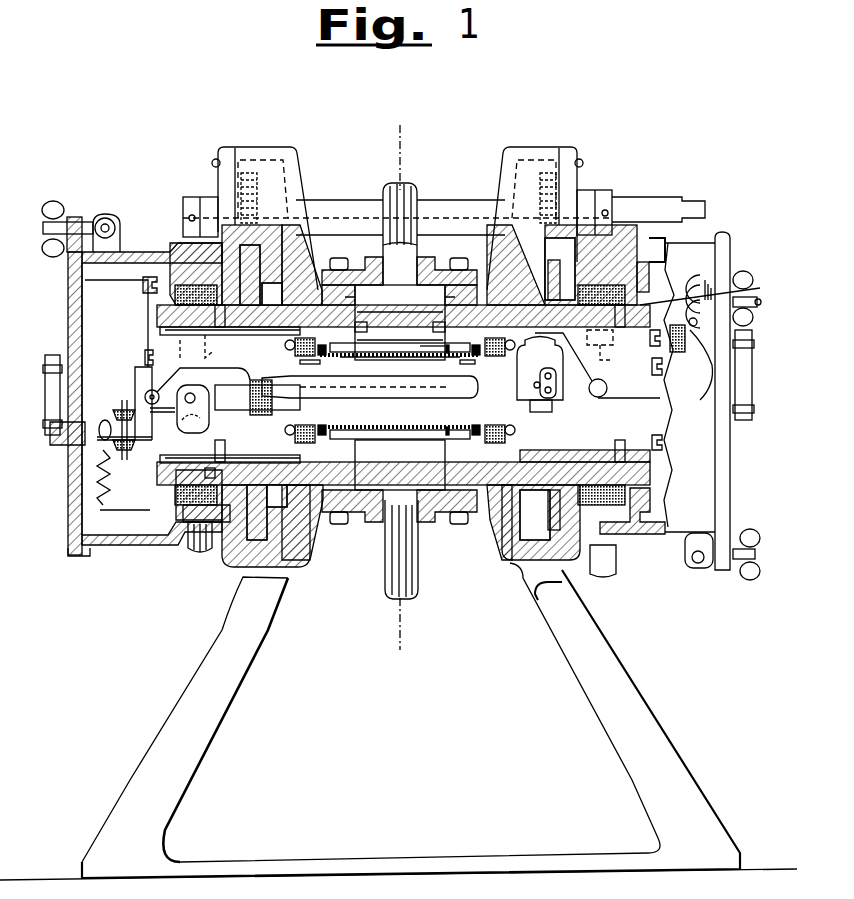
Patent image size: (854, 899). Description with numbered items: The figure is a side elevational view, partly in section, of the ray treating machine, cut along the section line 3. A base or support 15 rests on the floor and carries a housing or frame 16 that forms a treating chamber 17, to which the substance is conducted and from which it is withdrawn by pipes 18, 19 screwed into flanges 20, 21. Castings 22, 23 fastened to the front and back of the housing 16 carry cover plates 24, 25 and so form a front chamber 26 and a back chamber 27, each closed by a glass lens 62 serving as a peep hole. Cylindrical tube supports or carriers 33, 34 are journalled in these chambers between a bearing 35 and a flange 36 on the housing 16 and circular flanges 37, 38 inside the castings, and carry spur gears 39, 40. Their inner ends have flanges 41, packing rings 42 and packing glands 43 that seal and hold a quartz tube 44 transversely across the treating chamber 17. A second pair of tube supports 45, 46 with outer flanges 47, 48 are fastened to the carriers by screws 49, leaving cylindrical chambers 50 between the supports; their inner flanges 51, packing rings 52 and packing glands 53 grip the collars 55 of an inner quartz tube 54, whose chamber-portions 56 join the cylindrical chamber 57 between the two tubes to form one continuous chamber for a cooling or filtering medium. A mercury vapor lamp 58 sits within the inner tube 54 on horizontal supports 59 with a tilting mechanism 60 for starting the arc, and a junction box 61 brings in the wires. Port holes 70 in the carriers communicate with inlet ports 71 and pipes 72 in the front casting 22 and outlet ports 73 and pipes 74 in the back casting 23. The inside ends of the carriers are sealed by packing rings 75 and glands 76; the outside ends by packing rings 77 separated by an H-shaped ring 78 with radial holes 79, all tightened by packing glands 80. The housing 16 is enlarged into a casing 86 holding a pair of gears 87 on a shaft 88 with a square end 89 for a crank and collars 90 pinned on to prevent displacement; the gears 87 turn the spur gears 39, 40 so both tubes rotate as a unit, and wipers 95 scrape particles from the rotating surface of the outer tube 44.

The section line 3- 3 is at (405, 135).
The base or support 15 is at (238, 683).
The housing or frame 16 is at (300, 270).
The treating chamber 17 is at (400, 393).
The pipe 18 is at (412, 186).
The pipe 19 is at (420, 584).
The flange 20 is at (422, 268).
The flange 21 is at (430, 522).
The casting 22 is at (123, 250).
The casting 23 is at (700, 238).
The cover plate 24 is at (68, 292).
The cover plate 25 is at (730, 475).
The front chamber 26 is at (115, 399).
The back chamber 27 is at (672, 480).
The tube support or carrier 33 is at (276, 400).
The tube support or carrier 34 is at (537, 395).
The bearing 35 is at (445, 297).
The flange 36 is at (400, 395).
The circular flange 37 is at (254, 396).
The circular flange 38 is at (575, 295).
The spur gear 39 is at (262, 275).
The spur gear 40 is at (543, 387).
The flange 41 is at (400, 392).
The packing ring 42 is at (427, 341).
The packing gland 43 is at (370, 340).
The quartz tube 44 is at (400, 408).
The tube support 45 is at (228, 397).
The tube support 46 is at (585, 396).
The flange 47 is at (165, 318).
The flange 48 is at (662, 462).
The screw 49 is at (147, 352).
The cylindrical chamber 50 is at (240, 327).
The flange 51 is at (400, 391).
The packing ring 52 is at (425, 390).
The packing gland 53 is at (524, 445).
The quartz tube 54 is at (392, 366).
The cylindrical collar 55 is at (375, 367).
The chamber-portion 56 is at (399, 390).
The cylindrical chamber 57 is at (441, 390).
The mercury vapor lamp 58 is at (232, 398).
The support 59 is at (135, 383).
The tilting mechanism 60 is at (193, 409).
The junction box 61 is at (708, 405).
The glass lens and mounting 62 is at (752, 368).
The port hole 70 is at (222, 328).
The inlet port 71 is at (195, 290).
The pipe 72 is at (203, 360).
The outlet port 73 is at (598, 285).
The pipe 74 is at (608, 352).
The packing ring 75 is at (340, 290).
The packing gland 76 is at (300, 290).
The packing ring 77 is at (172, 298).
The ring 78 is at (185, 285).
The radial hole 79 is at (215, 472).
The packing gland 80 is at (143, 280).
The casing 86 is at (285, 147).
The gear 87 is at (250, 173).
The shaft 88 is at (358, 205).
The square end 89 is at (693, 201).
The collar 90 is at (193, 197).
The wiper 95 is at (382, 386).